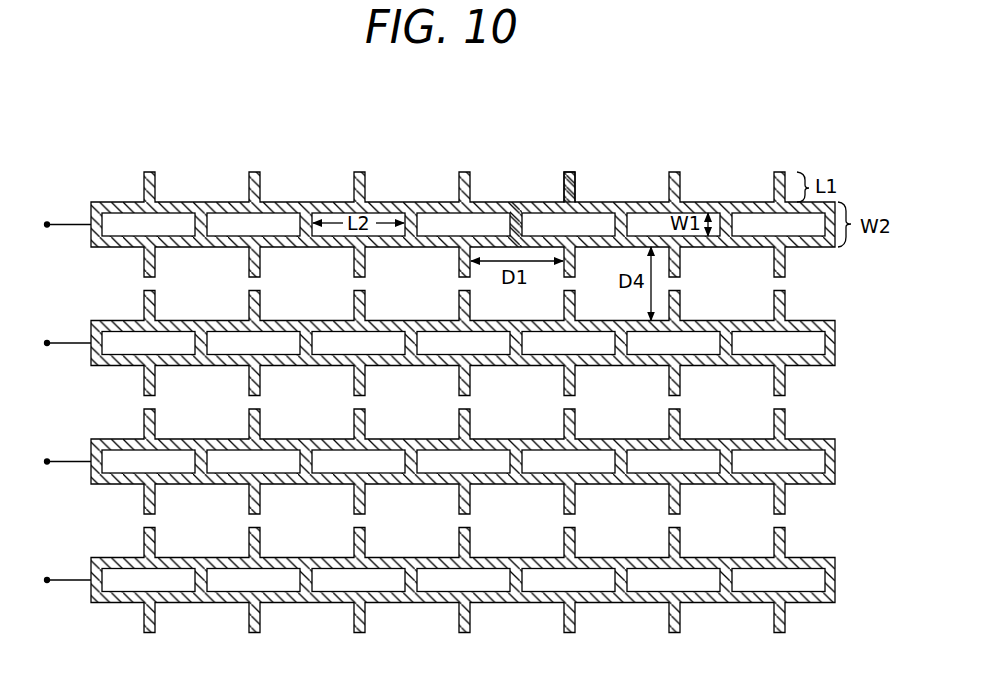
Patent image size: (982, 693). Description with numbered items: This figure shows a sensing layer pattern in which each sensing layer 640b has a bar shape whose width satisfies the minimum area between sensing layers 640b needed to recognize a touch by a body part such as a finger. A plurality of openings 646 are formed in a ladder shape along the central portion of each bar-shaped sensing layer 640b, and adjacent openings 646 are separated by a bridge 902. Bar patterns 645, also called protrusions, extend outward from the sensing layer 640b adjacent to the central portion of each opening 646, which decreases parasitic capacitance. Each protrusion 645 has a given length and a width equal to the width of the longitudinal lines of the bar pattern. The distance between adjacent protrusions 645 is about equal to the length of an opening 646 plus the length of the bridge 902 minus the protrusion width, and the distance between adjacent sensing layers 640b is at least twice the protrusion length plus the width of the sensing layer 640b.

The sensing layer 640b is at (390, 202).
The bridge 902 is at (514, 218).
The bar pattern 645 is at (575, 175).
The opening 646 is at (752, 227).